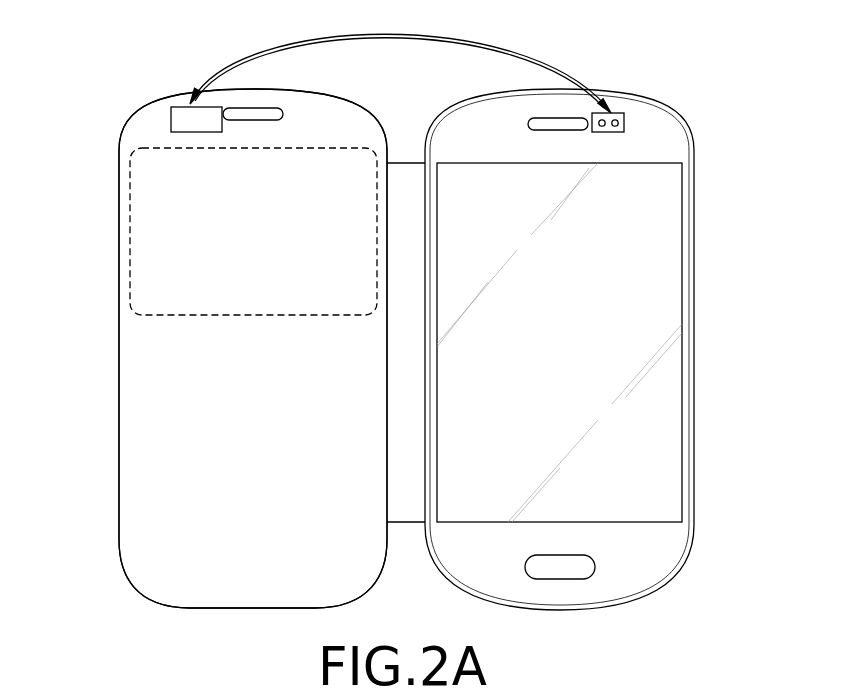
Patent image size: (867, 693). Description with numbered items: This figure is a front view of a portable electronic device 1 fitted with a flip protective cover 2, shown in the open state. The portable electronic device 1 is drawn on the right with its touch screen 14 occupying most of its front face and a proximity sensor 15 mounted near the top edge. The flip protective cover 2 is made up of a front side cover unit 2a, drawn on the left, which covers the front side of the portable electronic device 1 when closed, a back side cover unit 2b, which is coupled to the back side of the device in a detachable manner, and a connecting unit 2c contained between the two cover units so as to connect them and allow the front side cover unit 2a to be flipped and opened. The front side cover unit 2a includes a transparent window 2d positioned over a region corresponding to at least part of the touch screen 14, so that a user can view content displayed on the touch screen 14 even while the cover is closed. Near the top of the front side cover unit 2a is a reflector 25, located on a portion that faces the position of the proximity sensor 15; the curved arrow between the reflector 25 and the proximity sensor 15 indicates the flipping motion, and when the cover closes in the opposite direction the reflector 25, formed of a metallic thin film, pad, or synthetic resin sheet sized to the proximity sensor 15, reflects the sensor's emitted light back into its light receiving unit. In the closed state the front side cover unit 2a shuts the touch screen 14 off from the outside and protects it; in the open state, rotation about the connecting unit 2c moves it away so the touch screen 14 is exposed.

The portable electronic device 1 is at (670, 142).
The touch screen 14 is at (668, 292).
The proximity sensor 15 is at (624, 123).
The flip protective cover 2 is at (116, 264).
The front side cover unit 2a is at (133, 368).
The back side cover unit 2b is at (694, 531).
The connecting unit 2c is at (407, 173).
The transparent window 2d is at (130, 198).
The reflector 25 is at (171, 117).